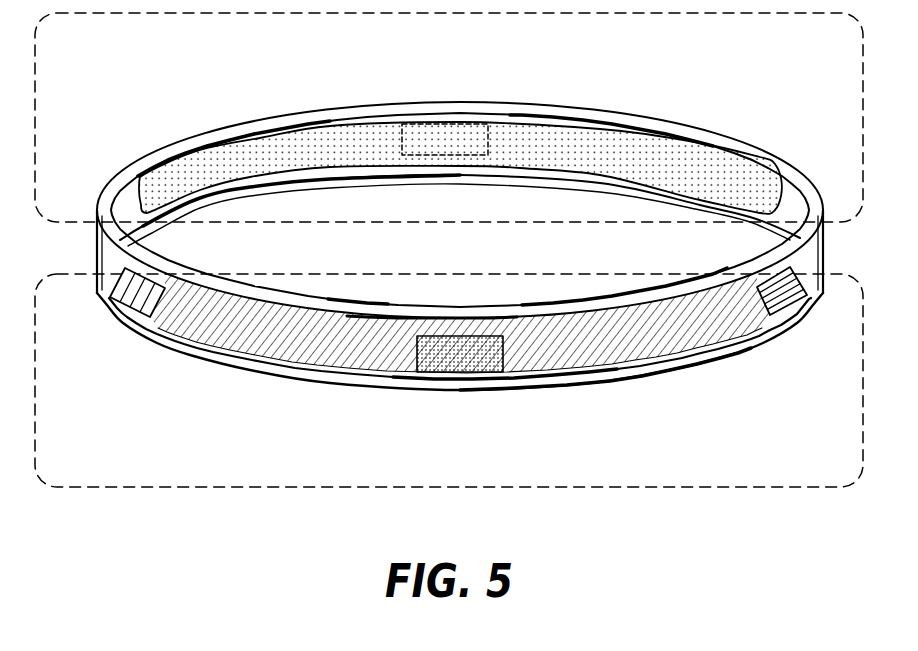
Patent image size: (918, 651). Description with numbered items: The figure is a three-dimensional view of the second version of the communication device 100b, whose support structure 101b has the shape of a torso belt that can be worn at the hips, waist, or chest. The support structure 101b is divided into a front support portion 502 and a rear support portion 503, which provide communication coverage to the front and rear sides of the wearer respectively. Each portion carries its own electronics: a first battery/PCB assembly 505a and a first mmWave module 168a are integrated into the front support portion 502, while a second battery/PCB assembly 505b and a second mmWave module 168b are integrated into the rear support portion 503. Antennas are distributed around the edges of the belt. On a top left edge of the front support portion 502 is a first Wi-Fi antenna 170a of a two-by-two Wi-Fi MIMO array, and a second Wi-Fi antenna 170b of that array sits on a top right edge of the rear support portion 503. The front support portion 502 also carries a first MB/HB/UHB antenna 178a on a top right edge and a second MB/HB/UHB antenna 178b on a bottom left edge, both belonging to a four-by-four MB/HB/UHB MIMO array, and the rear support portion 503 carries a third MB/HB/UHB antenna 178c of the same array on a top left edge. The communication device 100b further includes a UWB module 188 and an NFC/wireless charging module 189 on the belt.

The rear support portion 503 is at (558, 42).
The front support portion 502 is at (558, 478).
The communication device 100b is at (173, 134).
The support structure 101b is at (120, 197).
The second Wi-Fi antenna 170b is at (289, 116).
The first Wi-Fi antenna 170a is at (608, 310).
The second mmWave module 168b is at (442, 122).
The first mmWave module 168a is at (437, 373).
The second battery/PCB assembly 505b is at (513, 128).
The first battery/PCB assembly 505a is at (378, 368).
The first MB/HB/UHB antenna 178a is at (345, 312).
The second MB/HB/UHB antenna 178b is at (636, 372).
The third MB/HB/UHB antenna 178c is at (708, 133).
The UWB module 188 is at (140, 293).
The NFC/wireless charging module 189 is at (781, 305).